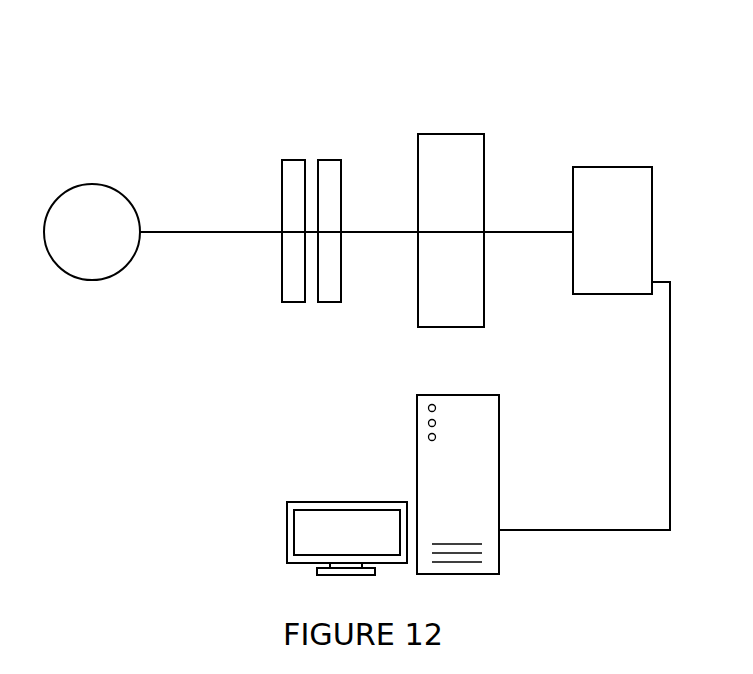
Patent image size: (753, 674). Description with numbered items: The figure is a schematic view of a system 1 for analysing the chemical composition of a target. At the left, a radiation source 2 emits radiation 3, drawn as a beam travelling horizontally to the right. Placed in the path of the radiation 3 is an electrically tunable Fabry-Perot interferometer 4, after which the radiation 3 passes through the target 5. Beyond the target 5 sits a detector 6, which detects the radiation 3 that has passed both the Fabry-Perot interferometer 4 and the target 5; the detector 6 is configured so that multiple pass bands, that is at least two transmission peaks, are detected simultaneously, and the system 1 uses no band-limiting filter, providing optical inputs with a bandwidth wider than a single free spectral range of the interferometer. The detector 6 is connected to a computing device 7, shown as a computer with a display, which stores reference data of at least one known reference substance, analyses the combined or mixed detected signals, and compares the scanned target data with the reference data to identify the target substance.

The system 1 is at (283, 363).
The radiation source 2 is at (98, 185).
The radiation 3 is at (185, 228).
The electrically tunable Fabry-Perot interferometer 4 is at (296, 158).
The target 5 is at (450, 133).
The detector 6 is at (605, 165).
The computing device 7 is at (487, 488).